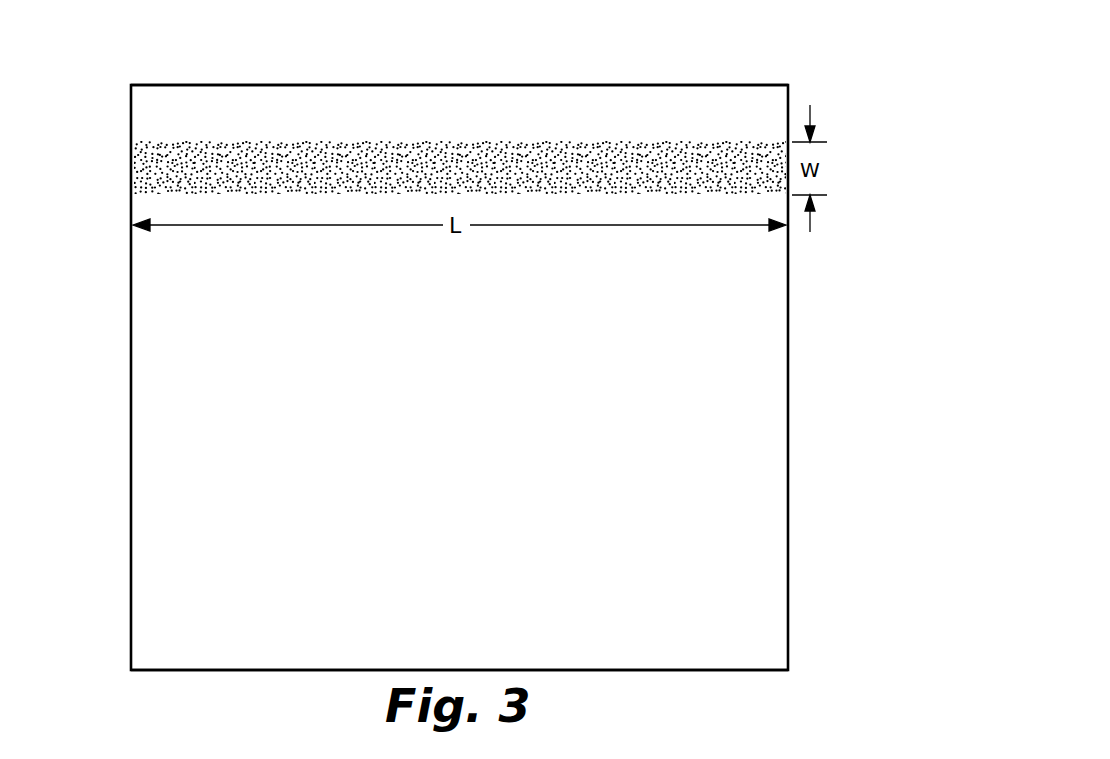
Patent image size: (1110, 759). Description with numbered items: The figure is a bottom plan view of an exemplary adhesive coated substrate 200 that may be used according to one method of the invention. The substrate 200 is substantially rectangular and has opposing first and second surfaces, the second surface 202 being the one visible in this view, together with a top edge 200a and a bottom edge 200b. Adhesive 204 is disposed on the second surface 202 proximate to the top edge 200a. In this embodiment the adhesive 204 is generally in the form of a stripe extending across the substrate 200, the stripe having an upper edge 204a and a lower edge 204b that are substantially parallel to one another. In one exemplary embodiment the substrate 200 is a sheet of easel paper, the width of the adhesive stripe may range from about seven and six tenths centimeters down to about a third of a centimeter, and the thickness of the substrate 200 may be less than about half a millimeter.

The substrate 200 is at (718, 52).
The top edge 200a is at (525, 85).
The bottom edge 200b is at (635, 670).
The second surface 202 is at (470, 407).
The adhesive 204 is at (143, 168).
The upper edge 204a is at (164, 142).
The lower edge 204b is at (173, 192).